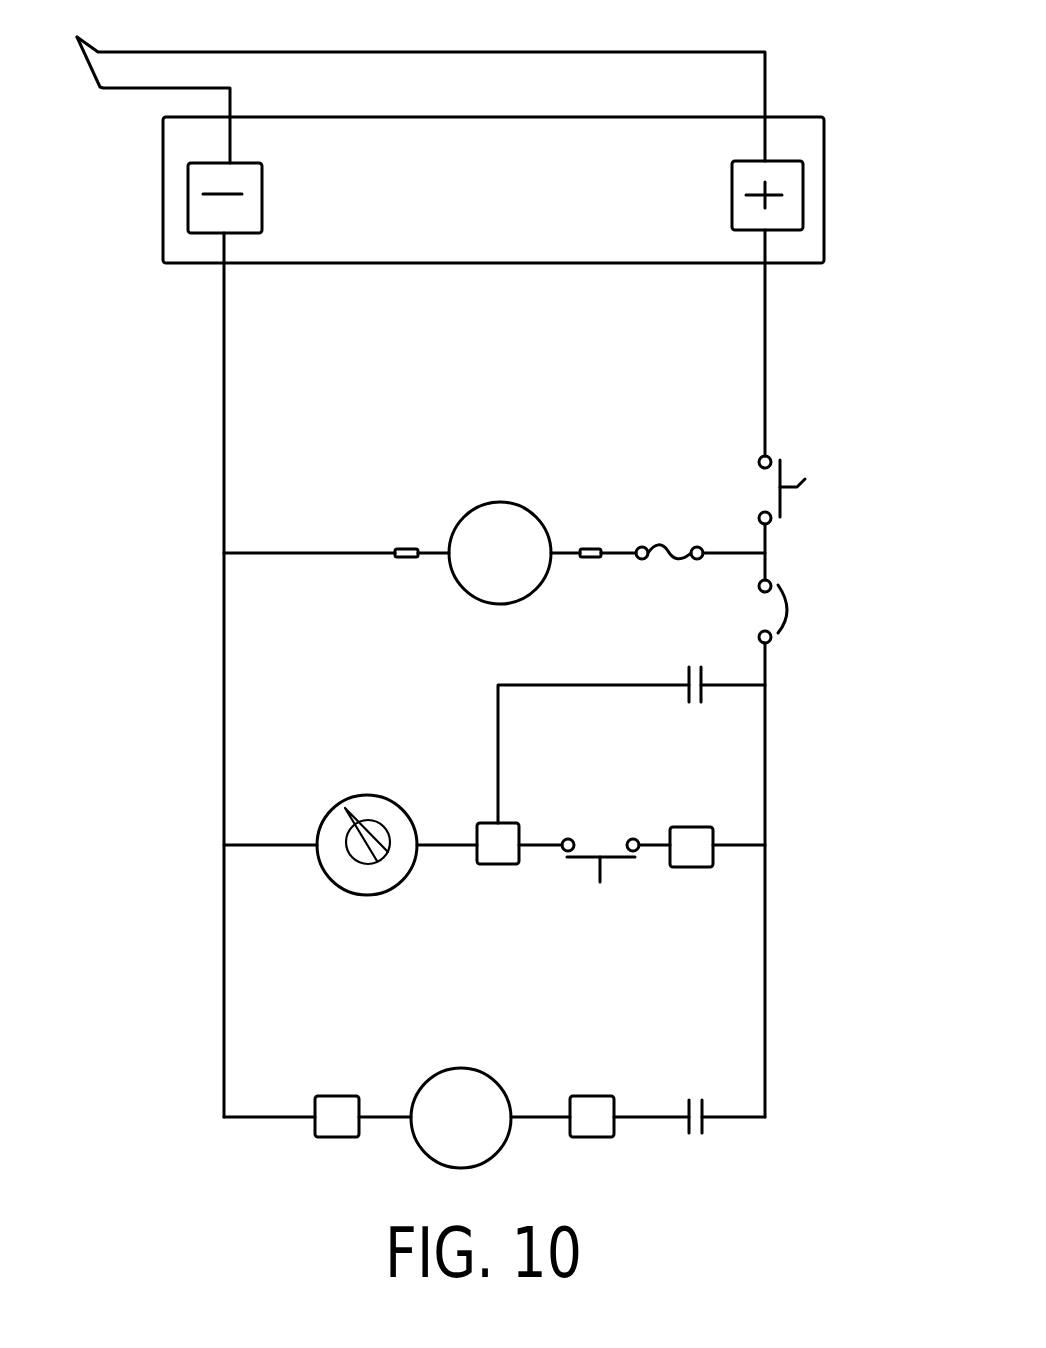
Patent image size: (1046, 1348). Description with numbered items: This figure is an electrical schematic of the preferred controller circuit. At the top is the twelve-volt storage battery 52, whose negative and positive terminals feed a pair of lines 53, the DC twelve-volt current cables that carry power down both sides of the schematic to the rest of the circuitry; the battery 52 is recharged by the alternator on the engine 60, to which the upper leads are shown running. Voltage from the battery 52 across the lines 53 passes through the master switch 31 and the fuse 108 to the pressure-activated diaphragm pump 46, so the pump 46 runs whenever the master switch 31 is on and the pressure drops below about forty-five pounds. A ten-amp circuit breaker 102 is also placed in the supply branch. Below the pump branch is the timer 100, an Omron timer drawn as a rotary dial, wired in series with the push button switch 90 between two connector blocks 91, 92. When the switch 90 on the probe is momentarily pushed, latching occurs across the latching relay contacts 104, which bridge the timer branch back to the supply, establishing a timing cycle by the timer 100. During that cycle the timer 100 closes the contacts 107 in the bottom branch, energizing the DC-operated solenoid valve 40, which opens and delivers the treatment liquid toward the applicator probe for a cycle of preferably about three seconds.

The engine 60 is at (406, 81).
The storage battery 52 is at (596, 200).
The lines 53 is at (224, 374).
The diaphragm pump 46 is at (498, 502).
The fuse 108 is at (661, 546).
The master switch 31 is at (781, 505).
The circuit breaker 102 is at (784, 622).
The latching relay contacts 104 is at (682, 677).
The timer 100 is at (358, 775).
The contact block 91 is at (538, 845).
The push button switch 90 is at (613, 858).
The contact block 92 is at (748, 845).
The solenoid valve 40 is at (467, 1103).
The contacts 107 is at (683, 1110).